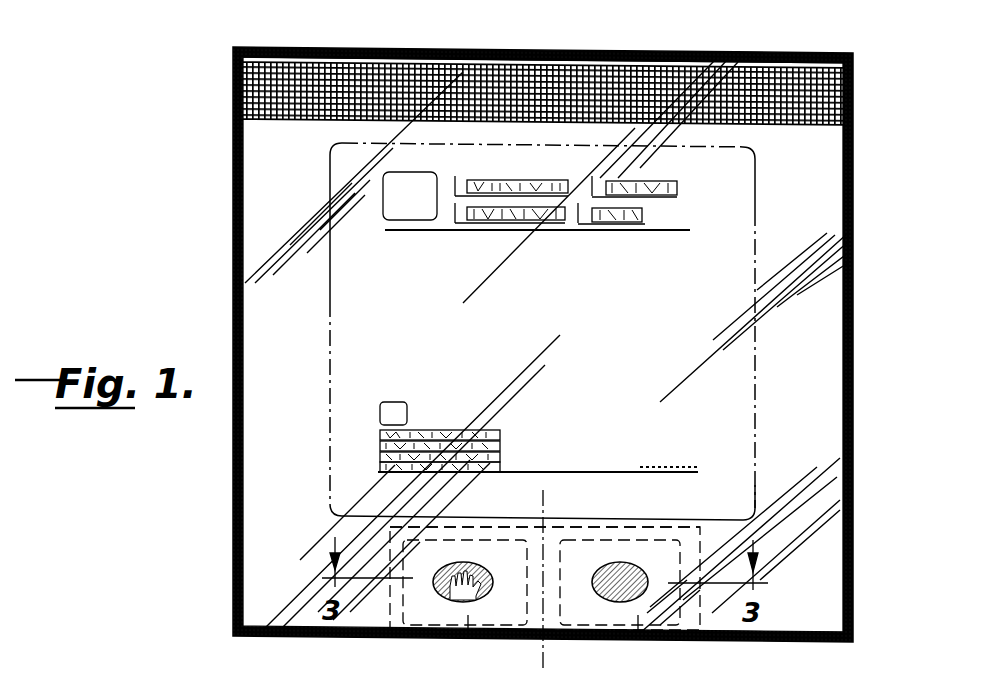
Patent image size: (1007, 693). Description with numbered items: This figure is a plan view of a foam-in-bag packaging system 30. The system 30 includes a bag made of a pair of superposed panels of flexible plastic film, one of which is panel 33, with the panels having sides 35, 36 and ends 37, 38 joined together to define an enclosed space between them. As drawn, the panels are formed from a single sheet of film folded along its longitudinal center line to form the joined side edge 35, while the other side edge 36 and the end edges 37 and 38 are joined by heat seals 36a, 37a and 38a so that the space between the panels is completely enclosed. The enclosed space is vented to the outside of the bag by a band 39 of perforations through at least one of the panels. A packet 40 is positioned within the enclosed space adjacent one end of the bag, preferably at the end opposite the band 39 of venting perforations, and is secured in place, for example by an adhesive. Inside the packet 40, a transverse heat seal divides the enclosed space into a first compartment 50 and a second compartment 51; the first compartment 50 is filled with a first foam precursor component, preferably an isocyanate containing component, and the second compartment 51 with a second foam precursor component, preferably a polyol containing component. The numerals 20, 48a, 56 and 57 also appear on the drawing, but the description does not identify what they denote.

The indicia 20 is at (670, 451).
The foam-in-bag packaging system 30 is at (262, 192).
The panel 33 is at (600, 316).
The side 35 is at (851, 339).
The side 36 is at (234, 293).
The heat seal 36a is at (235, 508).
The end 37 is at (377, 637).
The heat seal 37a is at (792, 633).
The end 38 is at (345, 12).
The heat seal 38a is at (552, 56).
The band of perforations 39 is at (257, 93).
The packet 40 is at (566, 514).
The lower compartment 48a is at (545, 610).
The first compartment 50 is at (465, 640).
The second compartment 51 is at (645, 643).
The Part A region 56 is at (497, 500).
The Part B region 57 is at (620, 547).